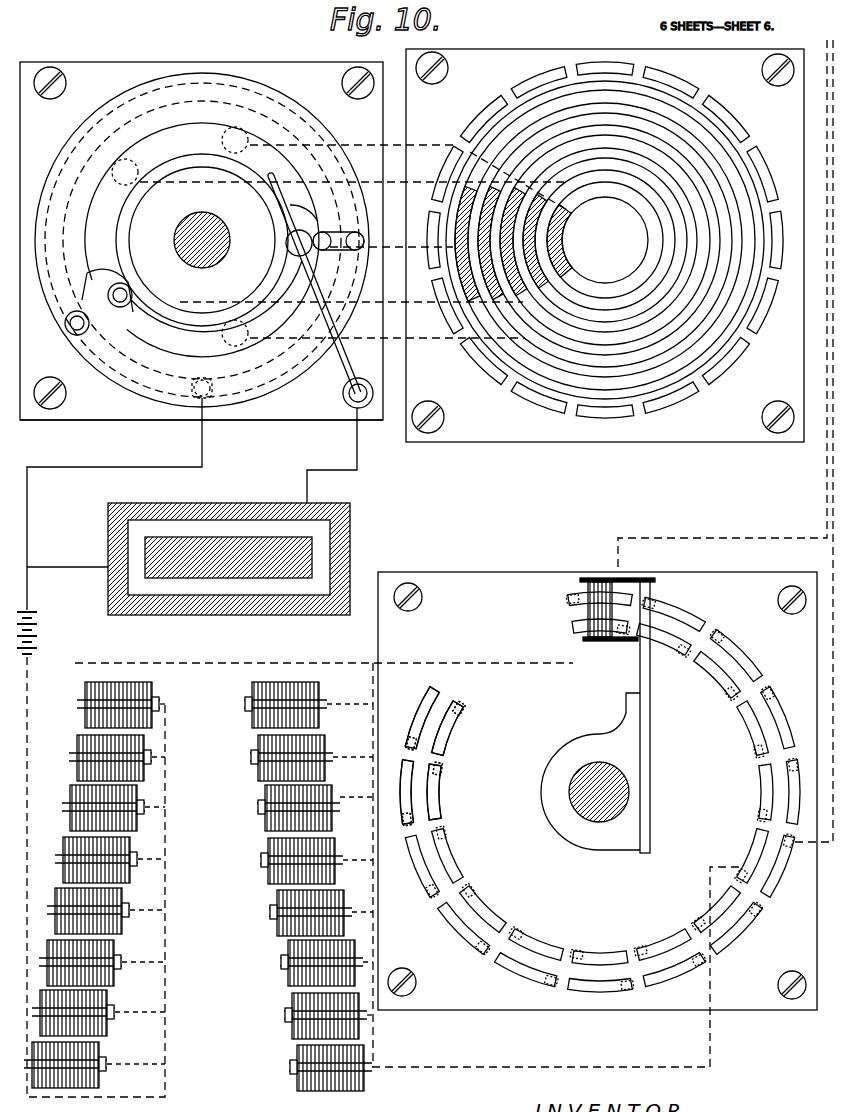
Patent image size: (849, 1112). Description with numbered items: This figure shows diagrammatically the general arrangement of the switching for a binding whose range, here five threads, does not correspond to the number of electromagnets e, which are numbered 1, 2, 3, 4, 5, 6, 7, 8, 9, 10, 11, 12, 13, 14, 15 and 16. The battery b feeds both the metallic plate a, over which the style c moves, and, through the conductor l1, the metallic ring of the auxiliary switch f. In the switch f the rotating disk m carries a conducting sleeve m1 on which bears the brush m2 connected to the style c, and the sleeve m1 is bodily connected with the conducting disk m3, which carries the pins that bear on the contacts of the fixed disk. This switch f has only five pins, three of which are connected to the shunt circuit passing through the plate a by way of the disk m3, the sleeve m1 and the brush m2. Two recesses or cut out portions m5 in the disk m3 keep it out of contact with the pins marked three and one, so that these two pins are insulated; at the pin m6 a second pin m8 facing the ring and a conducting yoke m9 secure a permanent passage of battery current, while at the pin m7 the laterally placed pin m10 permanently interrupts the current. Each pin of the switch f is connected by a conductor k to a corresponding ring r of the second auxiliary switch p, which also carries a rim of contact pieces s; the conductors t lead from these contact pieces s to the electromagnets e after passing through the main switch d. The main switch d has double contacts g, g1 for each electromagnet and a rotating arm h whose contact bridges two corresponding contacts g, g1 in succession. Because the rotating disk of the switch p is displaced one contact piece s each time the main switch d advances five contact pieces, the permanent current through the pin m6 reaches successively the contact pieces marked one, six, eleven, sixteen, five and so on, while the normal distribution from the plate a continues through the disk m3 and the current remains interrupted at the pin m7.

The electromagnet 1 / contact 1 is at (322, 233).
The electromagnet 2 / contact 2 is at (243, 343).
The electromagnet 3 / contact 3 is at (130, 294).
The electromagnet 4 / contact 4 is at (122, 162).
The electromagnet 5 / contact 5 is at (243, 133).
The electromagnet 6 / contact 6 is at (690, 90).
The electromagnet 7 / contact 7 is at (475, 118).
The electromagnet 8 / contact 8 is at (440, 318).
The electromagnet 9 / contact 9 is at (612, 418).
The electromagnet 10 / contact 10 is at (768, 336).
The electromagnet 11 / contact 11 is at (725, 105).
The electromagnet 12 / contact 12 is at (545, 80).
The electromagnet 13 / contact 13 is at (437, 260).
The electromagnet 14 / contact 14 is at (538, 412).
The electromagnet 15 / contact 15 is at (728, 378).
The electromagnet 16 / contact 16 is at (770, 165).
The rotating disk m is at (260, 388).
The conducting sleeve m1 is at (178, 168).
The brush m2 is at (335, 335).
The conducting disk m3 is at (275, 157).
The recesses or cut out portions m5 is at (102, 277).
The pin m6 is at (357, 208).
The pin m7 is at (110, 294).
The second pin m8 is at (350, 245).
The conducting yoke m9 is at (345, 276).
The pin m10 is at (72, 326).
The auxiliary switch f is at (78, 428).
The conductor k is at (395, 345).
The rings r is at (750, 293).
The contact pieces s is at (735, 130).
The second auxiliary switch p is at (760, 393).
The conductors t is at (826, 487).
The conductor l1 is at (32, 516).
The style c is at (304, 483).
The galvano or metallic plate a is at (352, 543).
The battery b is at (40, 636).
The electromagnets e is at (322, 692).
The main switch d is at (455, 1003).
The rotating arm h is at (650, 787).
The contact g is at (445, 918).
The contact g1 is at (490, 920).